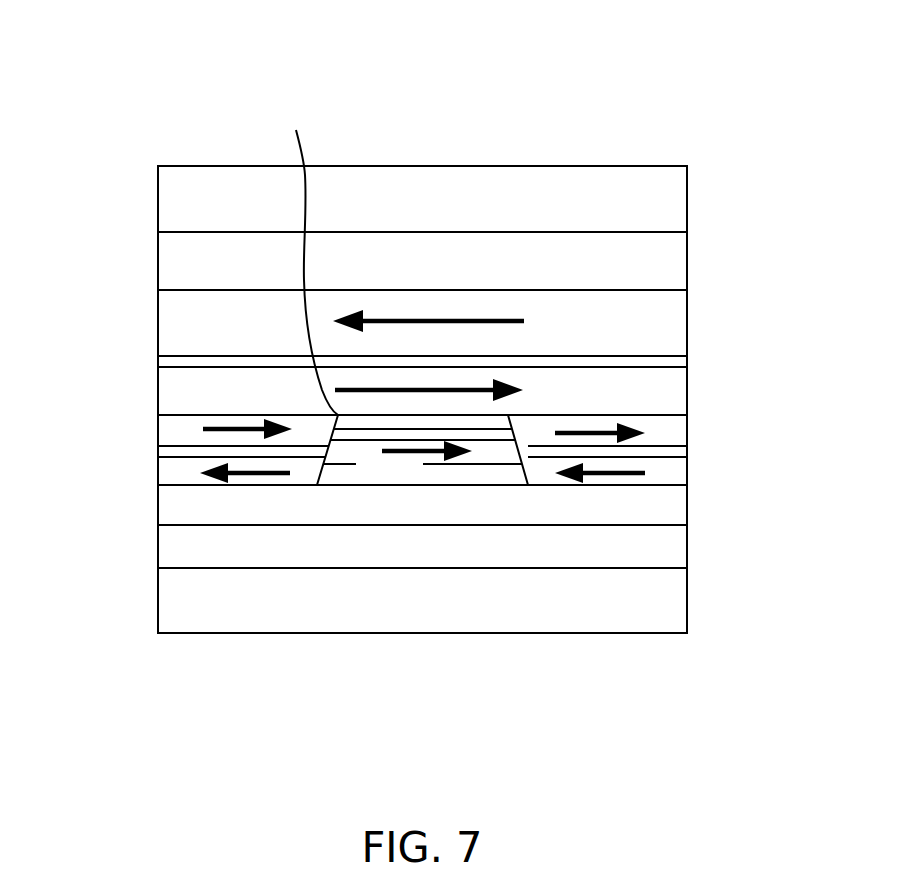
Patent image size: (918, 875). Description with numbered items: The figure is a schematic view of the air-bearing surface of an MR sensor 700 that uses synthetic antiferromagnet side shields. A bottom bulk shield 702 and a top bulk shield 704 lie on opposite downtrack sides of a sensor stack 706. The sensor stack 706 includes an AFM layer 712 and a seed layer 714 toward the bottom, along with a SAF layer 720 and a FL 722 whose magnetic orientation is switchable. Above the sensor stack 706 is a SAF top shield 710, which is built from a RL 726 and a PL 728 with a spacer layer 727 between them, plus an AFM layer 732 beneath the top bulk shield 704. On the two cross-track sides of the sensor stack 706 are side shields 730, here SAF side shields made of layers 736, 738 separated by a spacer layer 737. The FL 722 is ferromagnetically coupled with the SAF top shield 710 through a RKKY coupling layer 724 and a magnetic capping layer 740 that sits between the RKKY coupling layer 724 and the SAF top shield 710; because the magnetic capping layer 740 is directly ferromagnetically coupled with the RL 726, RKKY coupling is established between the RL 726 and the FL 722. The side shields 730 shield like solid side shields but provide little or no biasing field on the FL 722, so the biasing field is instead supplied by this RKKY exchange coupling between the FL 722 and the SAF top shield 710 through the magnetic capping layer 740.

The MR sensor 700 is at (163, 84).
The bottom bulk shield 702 is at (565, 633).
The top bulk shield 704 is at (158, 207).
The sensor stack 706 is at (687, 425).
The SAF top shield 710 is at (687, 233).
The AFM layer 712 is at (158, 505).
The seed layer 714 is at (158, 548).
The SAF layer 720 is at (398, 485).
The FL 722 is at (450, 464).
The RKKY coupling layer 724 is at (500, 440).
The RL 726 is at (158, 404).
The spacer layer 727 is at (158, 360).
The PL 728 is at (158, 325).
The side shields 730 is at (158, 415).
The AFM layer 732 is at (158, 266).
The layer 736 is at (687, 475).
The spacer layer 737 is at (687, 450).
The layer 738 is at (687, 417).
The magnetic capping layer 740 is at (305, 259).